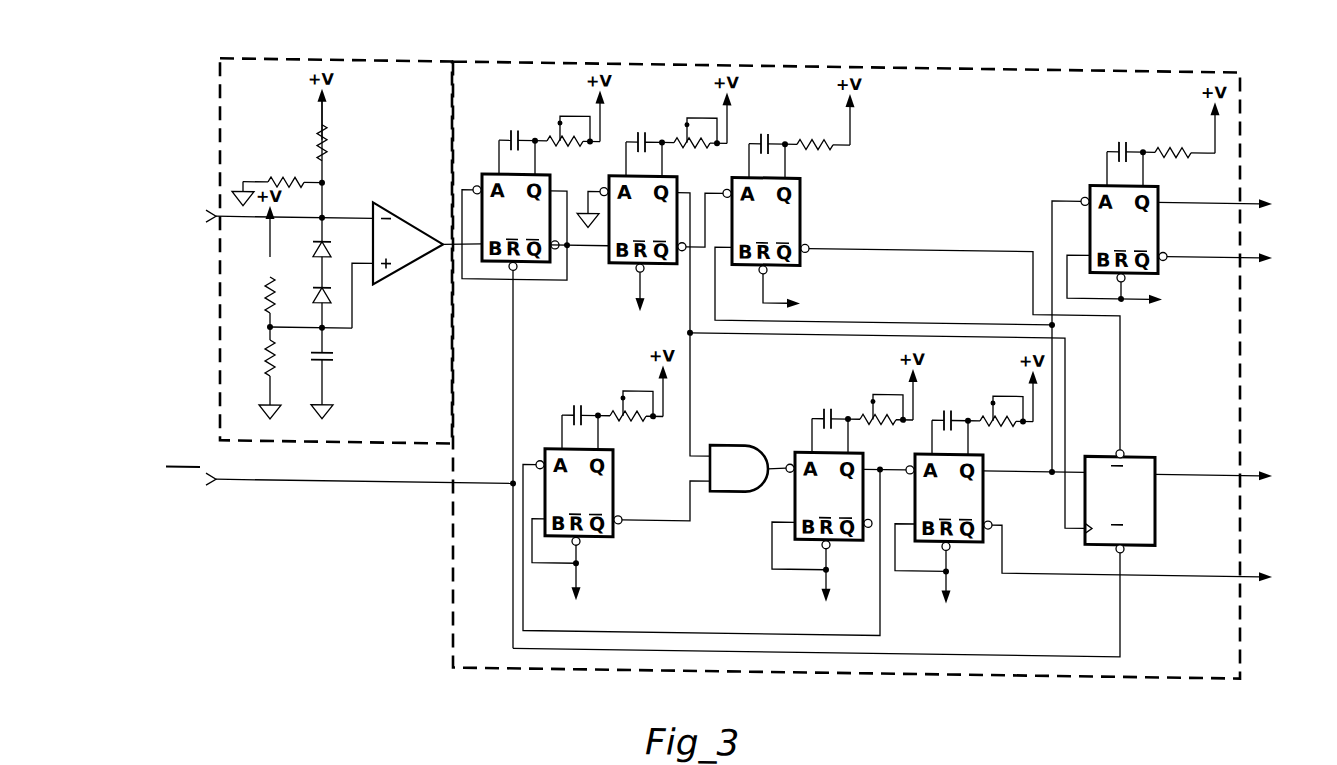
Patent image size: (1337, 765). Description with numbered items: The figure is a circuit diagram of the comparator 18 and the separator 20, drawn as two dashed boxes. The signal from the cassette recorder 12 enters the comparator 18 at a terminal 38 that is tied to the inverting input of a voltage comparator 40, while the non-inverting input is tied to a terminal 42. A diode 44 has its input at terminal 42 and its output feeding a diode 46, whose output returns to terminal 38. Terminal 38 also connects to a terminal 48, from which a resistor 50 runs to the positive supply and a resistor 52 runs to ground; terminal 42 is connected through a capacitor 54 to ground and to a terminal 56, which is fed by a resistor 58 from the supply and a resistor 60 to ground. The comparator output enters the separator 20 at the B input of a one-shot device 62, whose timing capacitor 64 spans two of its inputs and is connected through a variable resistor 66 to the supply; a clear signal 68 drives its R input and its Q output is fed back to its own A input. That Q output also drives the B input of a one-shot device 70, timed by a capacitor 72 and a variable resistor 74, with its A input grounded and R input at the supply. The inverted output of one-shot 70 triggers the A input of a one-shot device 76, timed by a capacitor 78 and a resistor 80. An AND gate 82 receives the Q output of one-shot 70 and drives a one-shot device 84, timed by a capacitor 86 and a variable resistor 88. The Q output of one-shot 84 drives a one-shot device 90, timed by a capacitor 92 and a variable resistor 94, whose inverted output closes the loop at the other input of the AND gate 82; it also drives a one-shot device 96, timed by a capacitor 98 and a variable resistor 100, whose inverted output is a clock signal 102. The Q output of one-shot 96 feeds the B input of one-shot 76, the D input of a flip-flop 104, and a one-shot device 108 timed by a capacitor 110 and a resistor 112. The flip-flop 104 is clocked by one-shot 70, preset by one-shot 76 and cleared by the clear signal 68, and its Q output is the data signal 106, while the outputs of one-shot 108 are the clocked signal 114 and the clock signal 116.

The cassette recorder 12 is at (150, 232).
The comparator 18 is at (347, 65).
The separator 20 is at (684, 65).
The terminal 38 is at (325, 221).
The voltage comparator 40 is at (422, 233).
The terminal 42 is at (320, 330).
The diode 44 is at (314, 297).
The diode 46 is at (314, 256).
The terminal 48 is at (326, 186).
The resistor 50 is at (330, 150).
The resistor 52 is at (288, 183).
The capacitor 54 is at (334, 362).
The terminal 56 is at (268, 333).
The resistor 58 is at (266, 296).
The resistor 60 is at (268, 372).
The one-shot device 62 is at (482, 177).
The capacitor 64 is at (512, 133).
The variable resistor 66 is at (565, 146).
The clear signal 68 is at (280, 486).
The one-shot device 70 is at (609, 270).
The capacitor 72 is at (641, 133).
The variable resistor 74 is at (684, 145).
The one-shot device 76 is at (801, 204).
The capacitor 78 is at (765, 133).
The resistor 80 is at (808, 133).
The AND gate 82 is at (740, 481).
The one-shot device 84 is at (790, 463).
The capacitor 86 is at (826, 407).
The variable resistor 88 is at (880, 424).
The one-shot device 90 is at (612, 494).
The capacitor 92 is at (576, 407).
The variable resistor 94 is at (636, 421).
The one-shot device 96 is at (982, 508).
The capacitor 98 is at (946, 407).
The variable resistor 100 is at (1005, 423).
The clock signal 102 is at (1172, 569).
The flip-flop 104 is at (1140, 452).
The data signal 106 is at (1176, 468).
The one-shot device 108 is at (1089, 180).
The capacitor 110 is at (1124, 143).
The resistor 112 is at (1172, 143).
The clocked signal 114 is at (1176, 196).
The clock signal 116 is at (1176, 250).